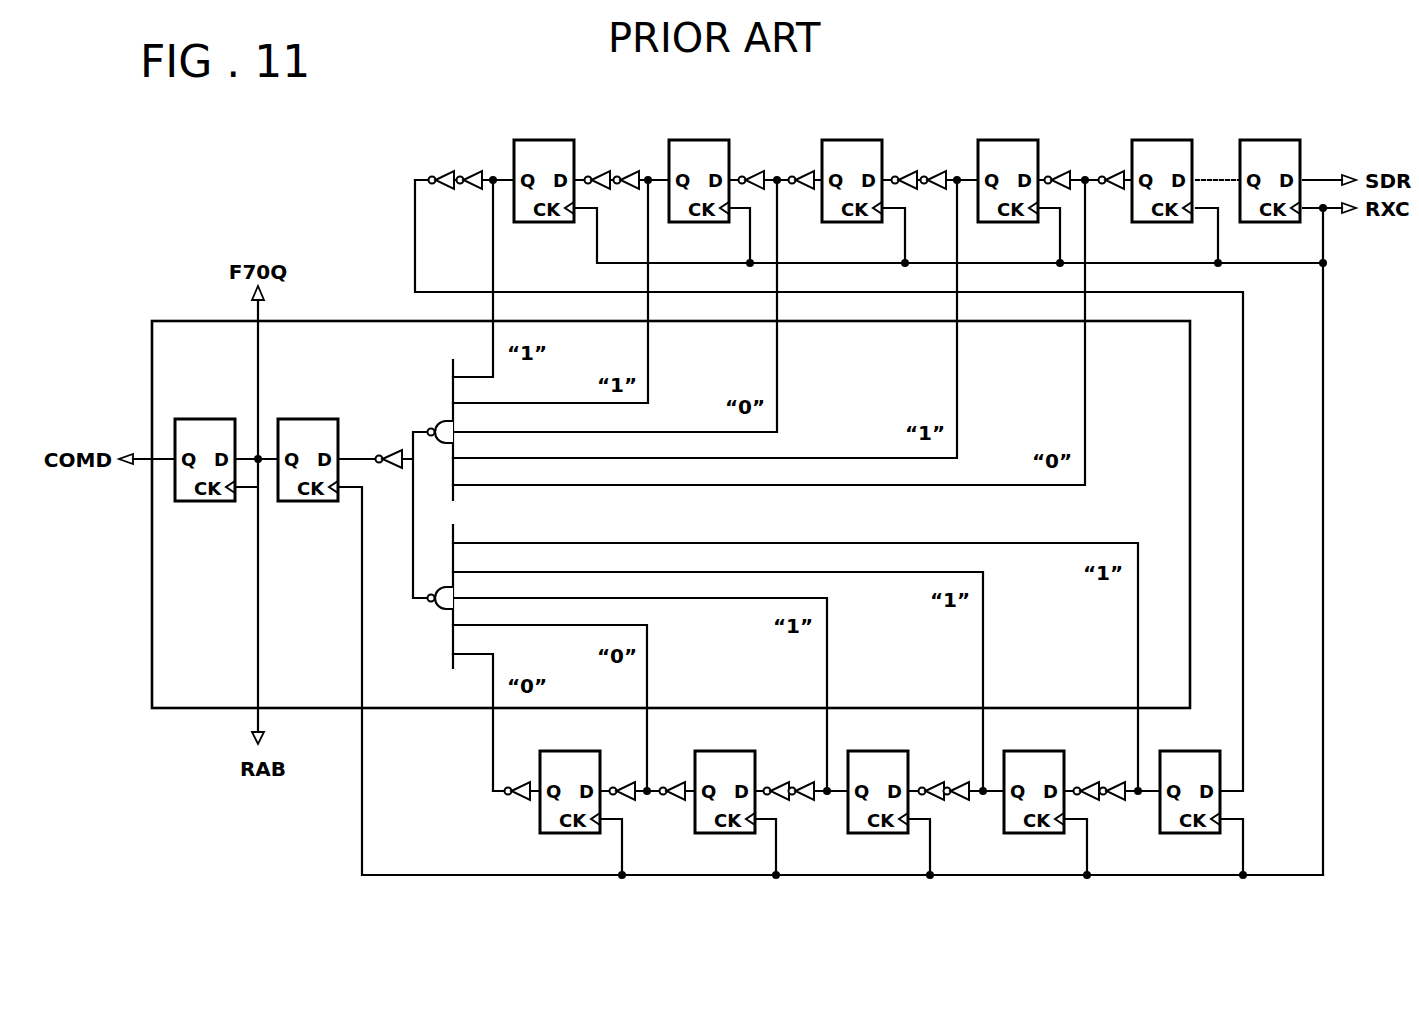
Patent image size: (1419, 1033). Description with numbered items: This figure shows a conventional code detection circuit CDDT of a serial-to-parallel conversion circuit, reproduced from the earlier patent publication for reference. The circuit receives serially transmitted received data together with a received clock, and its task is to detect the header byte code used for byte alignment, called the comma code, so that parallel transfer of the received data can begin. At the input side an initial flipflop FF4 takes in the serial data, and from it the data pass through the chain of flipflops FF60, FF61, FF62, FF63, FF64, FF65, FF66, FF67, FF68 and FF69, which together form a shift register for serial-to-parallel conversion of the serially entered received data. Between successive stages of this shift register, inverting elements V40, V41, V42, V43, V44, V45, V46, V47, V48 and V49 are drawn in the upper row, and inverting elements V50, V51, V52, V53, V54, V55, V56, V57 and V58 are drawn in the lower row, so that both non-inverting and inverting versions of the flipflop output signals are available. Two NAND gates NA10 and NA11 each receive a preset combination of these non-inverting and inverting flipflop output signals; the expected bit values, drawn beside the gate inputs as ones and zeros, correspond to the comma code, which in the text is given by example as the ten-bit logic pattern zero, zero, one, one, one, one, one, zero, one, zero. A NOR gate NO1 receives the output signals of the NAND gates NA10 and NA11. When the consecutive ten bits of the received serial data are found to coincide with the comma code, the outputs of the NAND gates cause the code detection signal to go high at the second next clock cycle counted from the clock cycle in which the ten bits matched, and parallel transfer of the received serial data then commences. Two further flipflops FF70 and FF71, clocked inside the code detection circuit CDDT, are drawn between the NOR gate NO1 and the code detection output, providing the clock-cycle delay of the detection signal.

The code detection circuit CDDT is at (230, 640).
The flip-flop FF4 is at (1270, 170).
The flipflop FF60 is at (1162, 170).
The flipflop FF61 is at (1008, 170).
The flipflop FF62 is at (852, 170).
The flipflop FF63 is at (699, 170).
The flipflop FF64 is at (544, 170).
The flipflop FF65 is at (1190, 781).
The flipflop FF66 is at (1034, 781).
The flipflop FF67 is at (878, 781).
The flipflop FF68 is at (725, 781).
The flipflop FF69 is at (570, 781).
The flip-flop FF70 is at (308, 449).
The flip-flop FF71 is at (205, 449).
The inverter V40 is at (1108, 198).
The inverter V41 is at (1066, 169).
The inverter V42 is at (937, 198).
The inverter V43 is at (911, 169).
The inverter V44 is at (797, 198).
The inverter V45 is at (757, 169).
The inverter V46 is at (632, 198).
The inverter V47 is at (604, 169).
The inverter V48 is at (482, 169).
The inverter V49 is at (449, 198).
The inverter V50 is at (1130, 809).
The inverter V51 is at (1094, 781).
The inverter V52 is at (972, 809).
The inverter V53 is at (939, 781).
The inverter V54 is at (819, 809).
The inverter V55 is at (785, 781).
The inverter V56 is at (663, 809).
The inverter V57 is at (631, 781).
The inverter V58 is at (512, 809).
The NAND gate NA10 is at (419, 611).
The NAND gate NA11 is at (419, 419).
The NOR gate NO1 is at (385, 445).